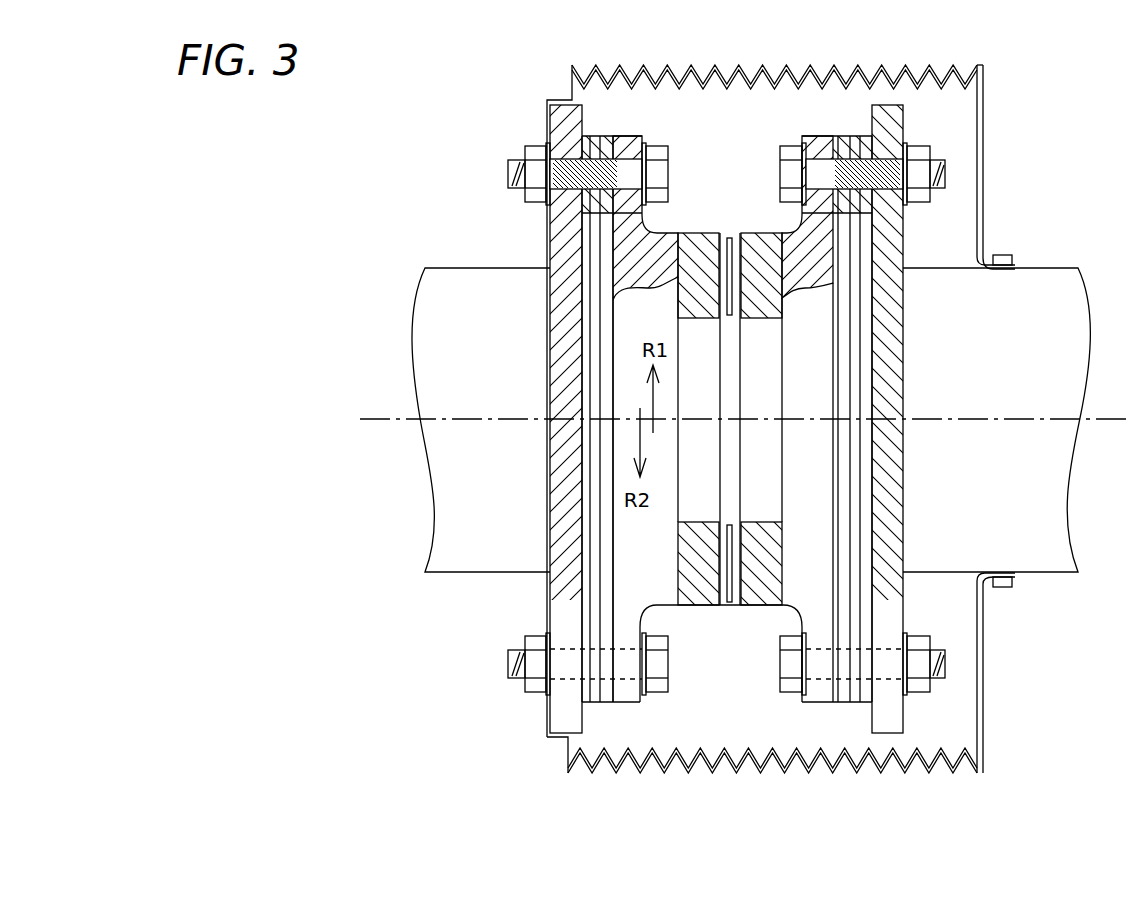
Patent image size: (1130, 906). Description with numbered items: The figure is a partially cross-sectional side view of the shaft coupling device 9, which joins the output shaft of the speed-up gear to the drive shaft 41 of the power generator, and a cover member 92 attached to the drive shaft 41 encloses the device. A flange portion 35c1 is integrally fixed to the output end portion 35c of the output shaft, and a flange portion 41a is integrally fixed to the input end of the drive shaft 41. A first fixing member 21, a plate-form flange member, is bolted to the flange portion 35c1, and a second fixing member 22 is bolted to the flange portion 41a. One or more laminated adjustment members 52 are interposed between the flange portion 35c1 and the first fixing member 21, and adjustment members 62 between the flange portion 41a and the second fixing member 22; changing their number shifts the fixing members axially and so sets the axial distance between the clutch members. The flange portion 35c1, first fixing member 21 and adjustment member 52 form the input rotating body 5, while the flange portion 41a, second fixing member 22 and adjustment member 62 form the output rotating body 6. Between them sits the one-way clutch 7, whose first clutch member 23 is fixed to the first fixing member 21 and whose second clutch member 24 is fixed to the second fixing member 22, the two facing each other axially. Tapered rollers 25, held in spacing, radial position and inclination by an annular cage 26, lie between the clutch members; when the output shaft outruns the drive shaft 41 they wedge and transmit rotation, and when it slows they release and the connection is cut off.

The input rotating body 5 is at (618, 121).
The output rotating body 6 is at (833, 122).
The one-way clutch 7 is at (663, 576).
The shaft coupling device 9 is at (1034, 149).
The first fixing member 21 is at (635, 137).
The second fixing member 22 is at (805, 137).
The first clutch member 23 is at (700, 606).
The second clutch member 24 is at (762, 606).
The tapered roller 25 is at (738, 243).
The annular cage 26 is at (722, 262).
The output end portion 35c is at (447, 268).
The flange portion 35c1 is at (556, 131).
The drive shaft 41 is at (1060, 268).
The flange portion 41a is at (903, 127).
The adjustment member 52 is at (600, 130).
The adjustment member 62 is at (850, 137).
The cover member 92 is at (930, 772).